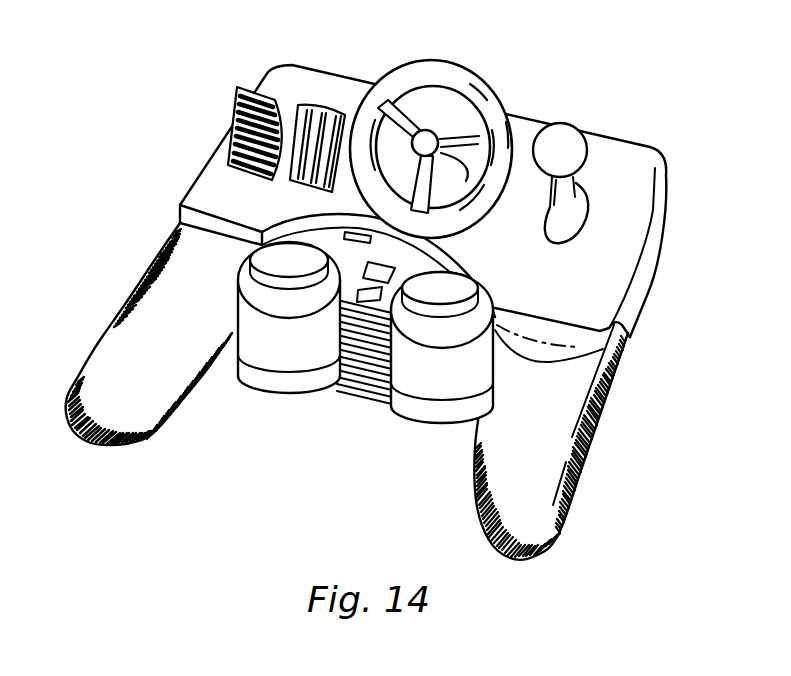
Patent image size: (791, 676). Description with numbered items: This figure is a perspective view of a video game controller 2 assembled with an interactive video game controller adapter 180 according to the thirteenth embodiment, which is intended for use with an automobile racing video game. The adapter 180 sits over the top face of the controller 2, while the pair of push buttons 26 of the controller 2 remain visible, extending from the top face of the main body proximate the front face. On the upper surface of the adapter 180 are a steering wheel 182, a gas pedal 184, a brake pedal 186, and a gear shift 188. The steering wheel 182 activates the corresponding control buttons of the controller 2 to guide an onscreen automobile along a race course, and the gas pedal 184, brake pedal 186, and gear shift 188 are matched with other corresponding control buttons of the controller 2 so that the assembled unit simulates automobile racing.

The video game controller 2 is at (548, 558).
The push buttons 26 is at (433, 305).
The adapter 180 is at (629, 158).
The steering wheel 182 is at (483, 96).
The gas pedal 184 is at (308, 106).
The brake pedal 186 is at (232, 120).
The gear shift 188 is at (560, 131).